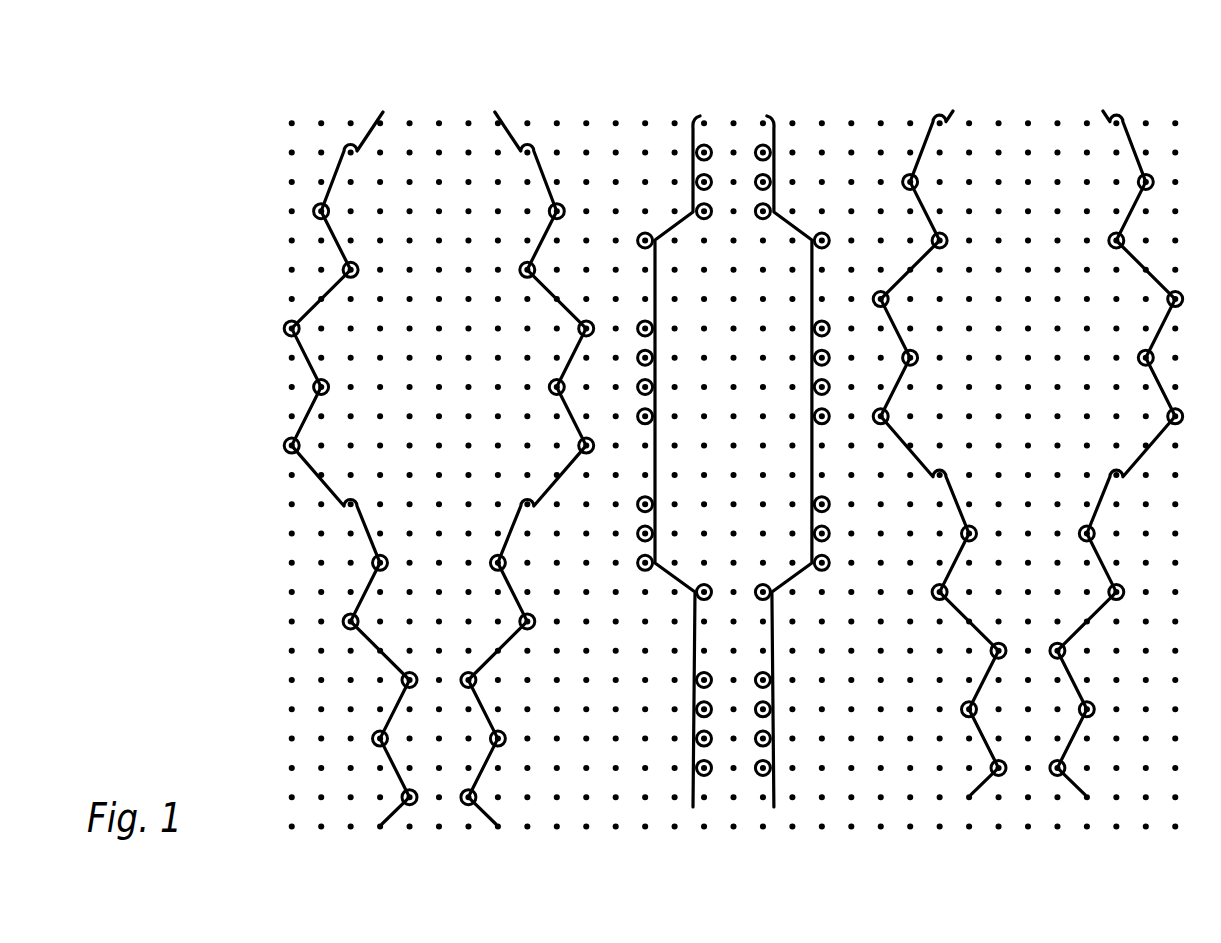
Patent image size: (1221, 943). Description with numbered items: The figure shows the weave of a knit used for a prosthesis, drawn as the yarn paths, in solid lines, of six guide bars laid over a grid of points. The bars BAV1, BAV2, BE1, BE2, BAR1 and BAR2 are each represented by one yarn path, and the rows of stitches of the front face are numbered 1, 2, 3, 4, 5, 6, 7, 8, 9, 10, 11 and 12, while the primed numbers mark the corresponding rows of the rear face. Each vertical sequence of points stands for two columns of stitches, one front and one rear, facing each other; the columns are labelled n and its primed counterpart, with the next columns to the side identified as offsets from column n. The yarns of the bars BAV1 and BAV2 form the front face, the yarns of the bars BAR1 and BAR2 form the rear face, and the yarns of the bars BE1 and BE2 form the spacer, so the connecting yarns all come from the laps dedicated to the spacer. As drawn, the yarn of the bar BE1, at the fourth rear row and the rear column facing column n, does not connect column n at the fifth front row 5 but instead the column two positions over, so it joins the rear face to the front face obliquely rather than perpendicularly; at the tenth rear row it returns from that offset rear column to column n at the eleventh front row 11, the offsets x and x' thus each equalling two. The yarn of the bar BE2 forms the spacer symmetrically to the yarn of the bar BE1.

The BAV1 bar BAV1 is at (350, 488).
The BAV2 bar BAV2 is at (527, 488).
The BE1 bar BE1 is at (676, 490).
The BE2 bar BE2 is at (788, 490).
The BAR1 bar BAR1 is at (939, 488).
The BAR2 bar BAR2 is at (1116, 488).
The column n is at (708, 106).
The row 12 of stitches of the front face 12 is at (734, 137).
The row 11 of stitches of the front face 11 is at (734, 196).
The row 10 of stitches of the front face 10 is at (734, 255).
The row 9 of stitches of the front face 9 is at (734, 313).
The row 8 of stitches of the front face 8 is at (734, 372).
The row 7 of stitches of the front face 7 is at (734, 430).
The row 6 of stitches of the front face 6 is at (734, 489).
The row 5 of stitches of the front face 5 is at (734, 548).
The row 4 of stitches of the front face 4 is at (734, 606).
The row 3 of stitches of the front face 3 is at (734, 665).
The row 2 of stitches of the front face 2 is at (734, 723).
The row 1 of stitches of the front face 1 is at (734, 791).